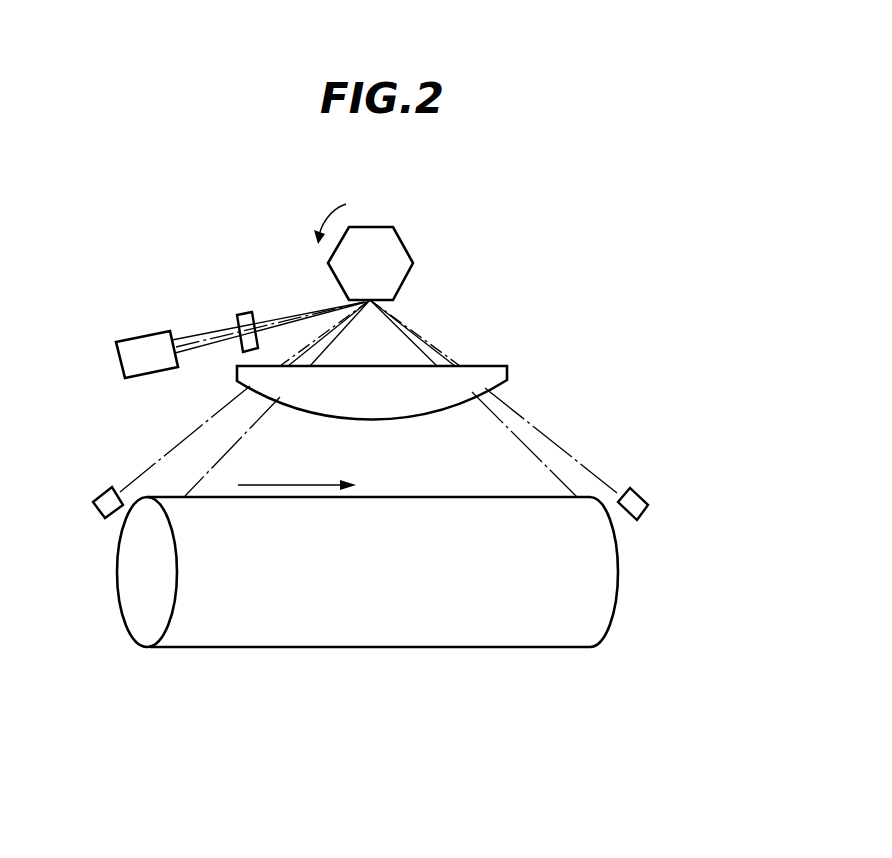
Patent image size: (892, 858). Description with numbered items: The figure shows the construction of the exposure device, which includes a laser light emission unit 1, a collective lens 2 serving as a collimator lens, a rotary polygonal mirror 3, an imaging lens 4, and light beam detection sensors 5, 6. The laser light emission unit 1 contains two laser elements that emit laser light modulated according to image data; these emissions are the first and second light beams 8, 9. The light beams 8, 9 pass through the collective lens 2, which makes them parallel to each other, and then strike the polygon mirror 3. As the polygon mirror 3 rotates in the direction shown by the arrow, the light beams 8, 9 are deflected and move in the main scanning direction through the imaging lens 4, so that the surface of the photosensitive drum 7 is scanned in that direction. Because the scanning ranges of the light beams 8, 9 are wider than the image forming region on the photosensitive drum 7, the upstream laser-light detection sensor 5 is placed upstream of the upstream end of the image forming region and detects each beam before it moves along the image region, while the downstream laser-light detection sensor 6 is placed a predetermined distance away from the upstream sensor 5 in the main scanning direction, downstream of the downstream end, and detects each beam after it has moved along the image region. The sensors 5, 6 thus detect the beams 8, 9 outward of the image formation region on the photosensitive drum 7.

The laser light emission unit 1 is at (137, 335).
The collective lens 2 is at (243, 314).
The rotary polygonal mirror 3 is at (372, 226).
The imaging lens 4 is at (485, 365).
The upstream laser-light detection sensor 5 is at (100, 491).
The downstream laser-light detection sensor 6 is at (641, 491).
The photosensitive drum 7 is at (192, 649).
The first light beam 8 is at (303, 318).
The second light beam 9 is at (273, 321).